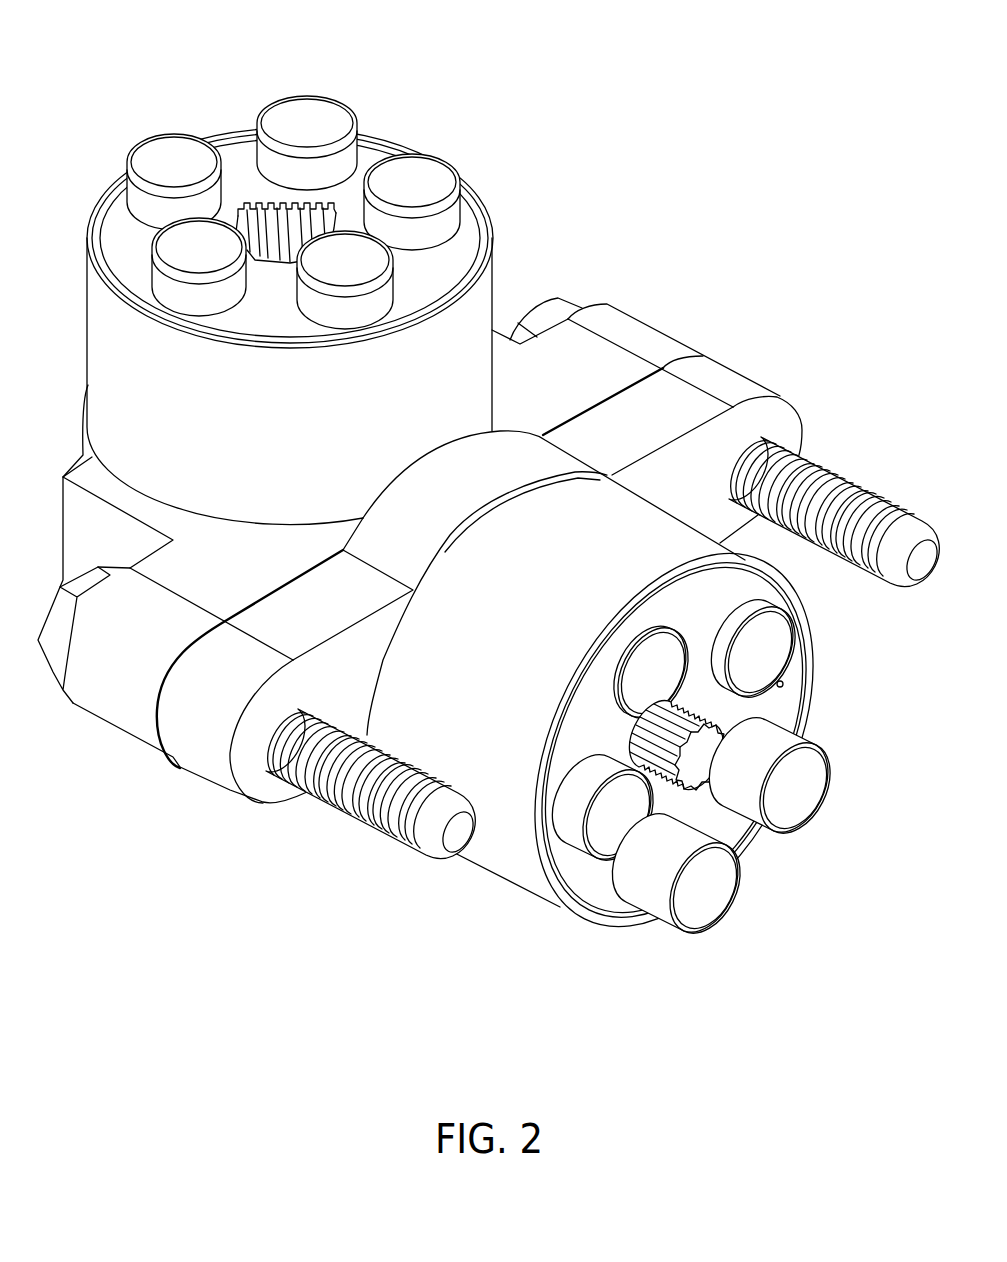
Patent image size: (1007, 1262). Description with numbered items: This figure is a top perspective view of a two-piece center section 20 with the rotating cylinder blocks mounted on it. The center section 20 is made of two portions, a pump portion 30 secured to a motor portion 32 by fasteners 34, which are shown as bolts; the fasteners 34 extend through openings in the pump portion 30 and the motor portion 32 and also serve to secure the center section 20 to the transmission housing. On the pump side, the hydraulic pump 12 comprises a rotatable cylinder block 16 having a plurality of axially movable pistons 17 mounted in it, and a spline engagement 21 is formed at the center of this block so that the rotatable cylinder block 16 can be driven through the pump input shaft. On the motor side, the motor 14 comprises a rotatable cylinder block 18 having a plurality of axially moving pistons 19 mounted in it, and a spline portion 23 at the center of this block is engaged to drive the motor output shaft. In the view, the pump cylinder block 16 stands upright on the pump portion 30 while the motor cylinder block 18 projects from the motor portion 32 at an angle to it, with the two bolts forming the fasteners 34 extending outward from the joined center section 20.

The hydraulic pump 12 is at (420, 97).
The motor 14 is at (503, 917).
The rotatable cylinder block 16 is at (306, 431).
The axially movable pistons 17 is at (293, 200).
The rotatable cylinder block 18 is at (522, 636).
The axially moving pistons 19 is at (812, 801).
The center section 20 is at (757, 283).
The spline engagement 21 is at (260, 206).
The spline portion 23 is at (657, 744).
The pump portion 30 is at (139, 660).
The motor portion 32 is at (222, 708).
The fasteners 34 is at (847, 479).